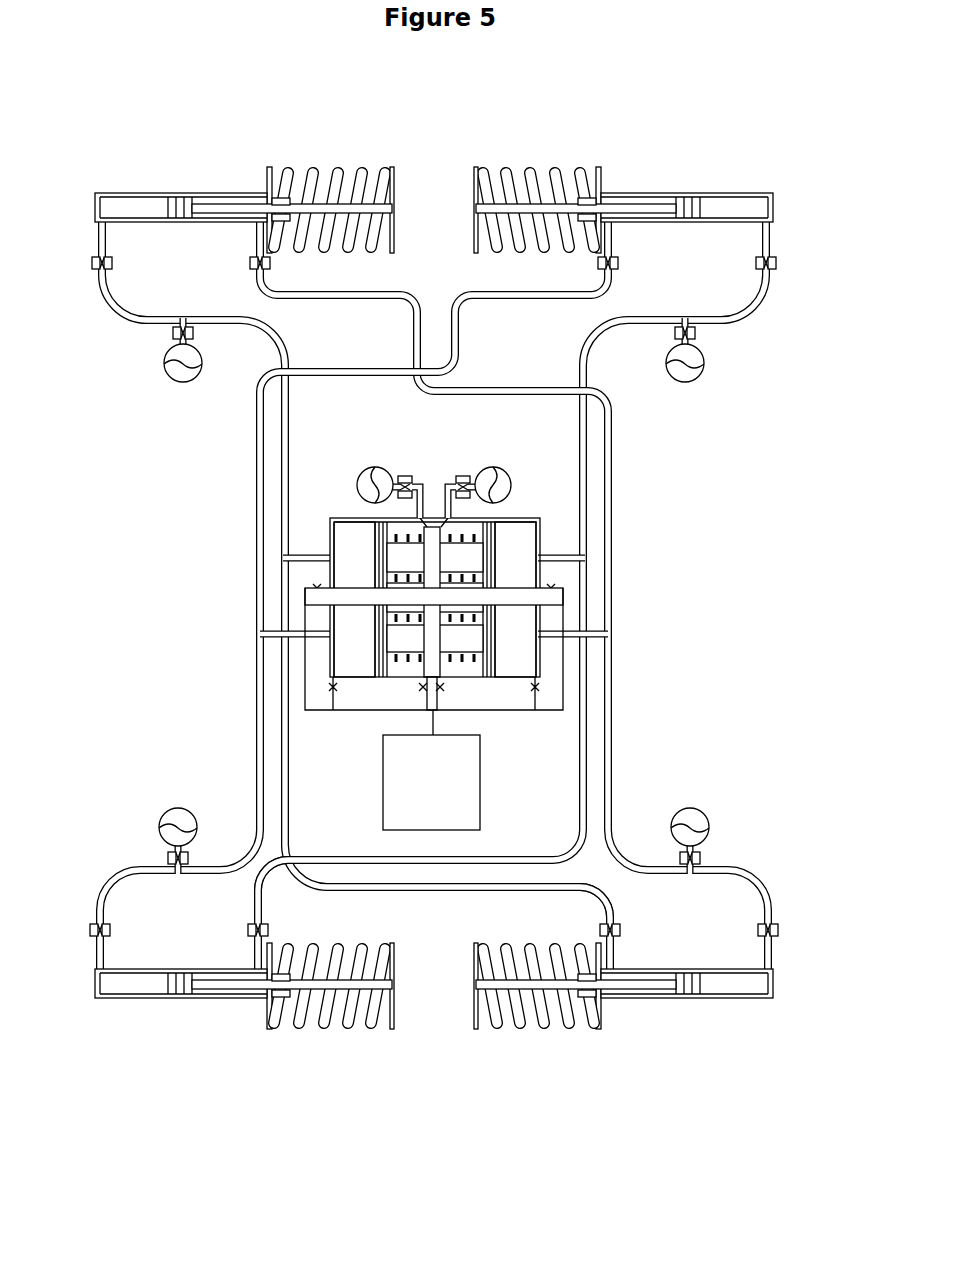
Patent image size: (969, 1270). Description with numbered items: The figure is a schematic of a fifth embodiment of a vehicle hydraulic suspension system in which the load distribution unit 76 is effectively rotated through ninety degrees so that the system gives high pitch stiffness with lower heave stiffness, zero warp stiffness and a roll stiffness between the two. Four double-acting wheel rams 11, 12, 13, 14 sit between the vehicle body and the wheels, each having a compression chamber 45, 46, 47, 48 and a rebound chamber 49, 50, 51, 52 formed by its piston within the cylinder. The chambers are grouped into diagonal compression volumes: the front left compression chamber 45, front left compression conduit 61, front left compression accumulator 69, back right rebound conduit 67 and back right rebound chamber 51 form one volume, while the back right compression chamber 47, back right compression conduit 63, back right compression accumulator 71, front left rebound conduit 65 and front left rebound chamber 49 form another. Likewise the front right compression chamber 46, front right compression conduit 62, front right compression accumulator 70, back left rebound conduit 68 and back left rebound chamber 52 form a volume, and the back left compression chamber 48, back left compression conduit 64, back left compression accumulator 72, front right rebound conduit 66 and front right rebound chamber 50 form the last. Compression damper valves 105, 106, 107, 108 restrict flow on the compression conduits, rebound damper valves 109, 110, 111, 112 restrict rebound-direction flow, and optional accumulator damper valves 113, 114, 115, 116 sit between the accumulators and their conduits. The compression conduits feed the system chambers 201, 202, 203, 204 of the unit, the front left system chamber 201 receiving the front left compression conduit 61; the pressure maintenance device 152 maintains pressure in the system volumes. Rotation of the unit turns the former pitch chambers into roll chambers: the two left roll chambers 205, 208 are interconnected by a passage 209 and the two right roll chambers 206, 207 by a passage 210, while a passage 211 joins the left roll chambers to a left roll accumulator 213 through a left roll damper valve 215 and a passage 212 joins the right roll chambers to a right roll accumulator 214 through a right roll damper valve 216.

The front left wheel ram 11 is at (122, 157).
The front right wheel ram 12 is at (746, 157).
The back right wheel ram 13 is at (716, 1045).
The back left wheel ram 14 is at (140, 1045).
The front left compression chamber 45 is at (133, 213).
The front right compression chamber 46 is at (732, 216).
The back right compression chamber 47 is at (727, 978).
The back left compression chamber 48 is at (136, 978).
The front left rebound chamber 49 is at (215, 215).
The front right rebound chamber 50 is at (655, 218).
The back right rebound chamber 51 is at (656, 976).
The back left rebound chamber 52 is at (205, 967).
The front left compression conduit 61 is at (290, 388).
The front right compression conduit 62 is at (580, 376).
The back right compression conduit 63 is at (611, 786).
The back left compression conduit 64 is at (257, 785).
The front left rebound conduit 65 is at (345, 300).
The front right rebound conduit 66 is at (521, 300).
The back right rebound conduit 67 is at (613, 916).
The back left rebound conduit 68 is at (256, 916).
The front left compression accumulator 69 is at (171, 376).
The front right compression accumulator 70 is at (703, 378).
The back right compression accumulator 71 is at (706, 813).
The back left compression accumulator 72 is at (164, 813).
The load distribution unit 76 is at (430, 452).
The front left compression damper valve 105 is at (100, 272).
The front right compression damper valve 106 is at (769, 272).
The back right compression damper valve 107 is at (771, 921).
The back left compression damper valve 108 is at (97, 921).
The front left rebound damper valve 109 is at (258, 272).
The front right rebound damper valve 110 is at (613, 272).
The back right rebound damper valve 111 is at (601, 926).
The back left rebound damper valve 112 is at (266, 926).
The front left accumulator damper valve 113 is at (172, 336).
The front right accumulator damper valve 114 is at (698, 342).
The back right accumulator damper valve 115 is at (700, 858).
The back left accumulator damper valve 116 is at (170, 855).
The pressure maintenance device 152 is at (389, 798).
The front left system chamber 201 is at (342, 532).
The front right system chamber 202 is at (524, 532).
The back right system chamber 203 is at (530, 663).
The back left system chamber 204 is at (335, 663).
The left roll chamber 205 is at (390, 527).
The right roll chamber 206 is at (480, 527).
The right roll chamber 207 is at (474, 665).
The left roll chamber 208 is at (393, 665).
The passage 209 is at (424, 618).
The passage 210 is at (441, 618).
The passage 211 is at (418, 478).
The passage 212 is at (448, 478).
The left roll accumulator 213 is at (362, 471).
The right roll accumulator 214 is at (506, 471).
The left roll damper valve 215 is at (399, 478).
The right roll damper valve 216 is at (469, 478).